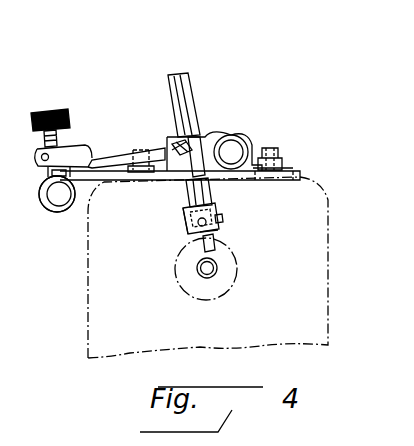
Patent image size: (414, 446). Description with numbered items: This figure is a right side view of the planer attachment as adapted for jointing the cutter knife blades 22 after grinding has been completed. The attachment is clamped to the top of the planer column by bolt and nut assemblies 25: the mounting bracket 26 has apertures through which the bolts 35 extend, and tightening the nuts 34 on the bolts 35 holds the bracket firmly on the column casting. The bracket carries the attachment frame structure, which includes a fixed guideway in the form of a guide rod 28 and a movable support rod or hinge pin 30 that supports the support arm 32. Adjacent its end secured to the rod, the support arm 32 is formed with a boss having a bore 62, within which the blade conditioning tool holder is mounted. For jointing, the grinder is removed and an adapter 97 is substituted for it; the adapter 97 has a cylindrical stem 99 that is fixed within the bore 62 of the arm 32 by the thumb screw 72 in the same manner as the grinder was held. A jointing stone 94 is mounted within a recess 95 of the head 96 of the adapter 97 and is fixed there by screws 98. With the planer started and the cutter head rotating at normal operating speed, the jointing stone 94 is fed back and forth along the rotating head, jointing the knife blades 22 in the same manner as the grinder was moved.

The cutter knife blades 22 is at (195, 260).
The bolt and nut assemblies 25 is at (147, 131).
The mounting brackets 26 is at (61, 222).
The guide rod 28 is at (57, 190).
The support rod or hinge pin 30 is at (244, 140).
The support arm 32 is at (101, 134).
The nuts 34 is at (293, 152).
The bolts 35 is at (278, 150).
The bore 62 is at (204, 118).
The thumb screw 72 is at (172, 142).
The jointing stone 94 is at (218, 234).
The recess 95 is at (184, 222).
The head 96 is at (219, 207).
The adapter 97 is at (186, 196).
The screws 98 is at (220, 226).
The cylindrical stem 99 is at (195, 85).